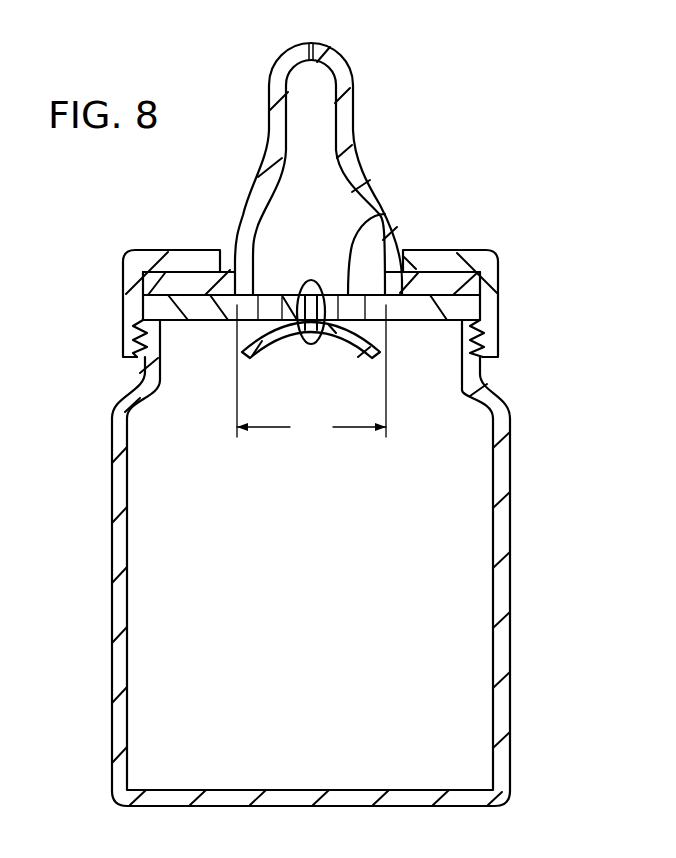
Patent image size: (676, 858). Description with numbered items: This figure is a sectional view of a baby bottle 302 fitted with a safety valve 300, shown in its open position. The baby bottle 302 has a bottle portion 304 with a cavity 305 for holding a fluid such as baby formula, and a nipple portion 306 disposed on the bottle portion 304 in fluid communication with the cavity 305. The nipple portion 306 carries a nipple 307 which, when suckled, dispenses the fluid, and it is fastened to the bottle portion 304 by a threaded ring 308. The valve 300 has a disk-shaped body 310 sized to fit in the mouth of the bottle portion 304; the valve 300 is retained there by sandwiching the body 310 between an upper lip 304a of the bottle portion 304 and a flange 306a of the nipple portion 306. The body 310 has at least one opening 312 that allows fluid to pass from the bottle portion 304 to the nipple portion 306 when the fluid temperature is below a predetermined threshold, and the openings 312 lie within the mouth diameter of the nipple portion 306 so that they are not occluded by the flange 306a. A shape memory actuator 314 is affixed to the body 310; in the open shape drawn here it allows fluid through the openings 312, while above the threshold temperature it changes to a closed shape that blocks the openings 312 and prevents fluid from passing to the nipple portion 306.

The valve 300 is at (417, 338).
The baby bottle 302 is at (478, 181).
The bottle portion 304 is at (514, 576).
The upper lip 304a is at (148, 315).
The cavity 305 is at (336, 636).
The nipple portion 306 is at (357, 101).
The flange 306a is at (441, 270).
The nipple 307 is at (267, 121).
The threaded ring 308 is at (500, 316).
The body 310 is at (183, 293).
The opening 312 is at (373, 222).
The shape memory actuator 314 is at (354, 360).